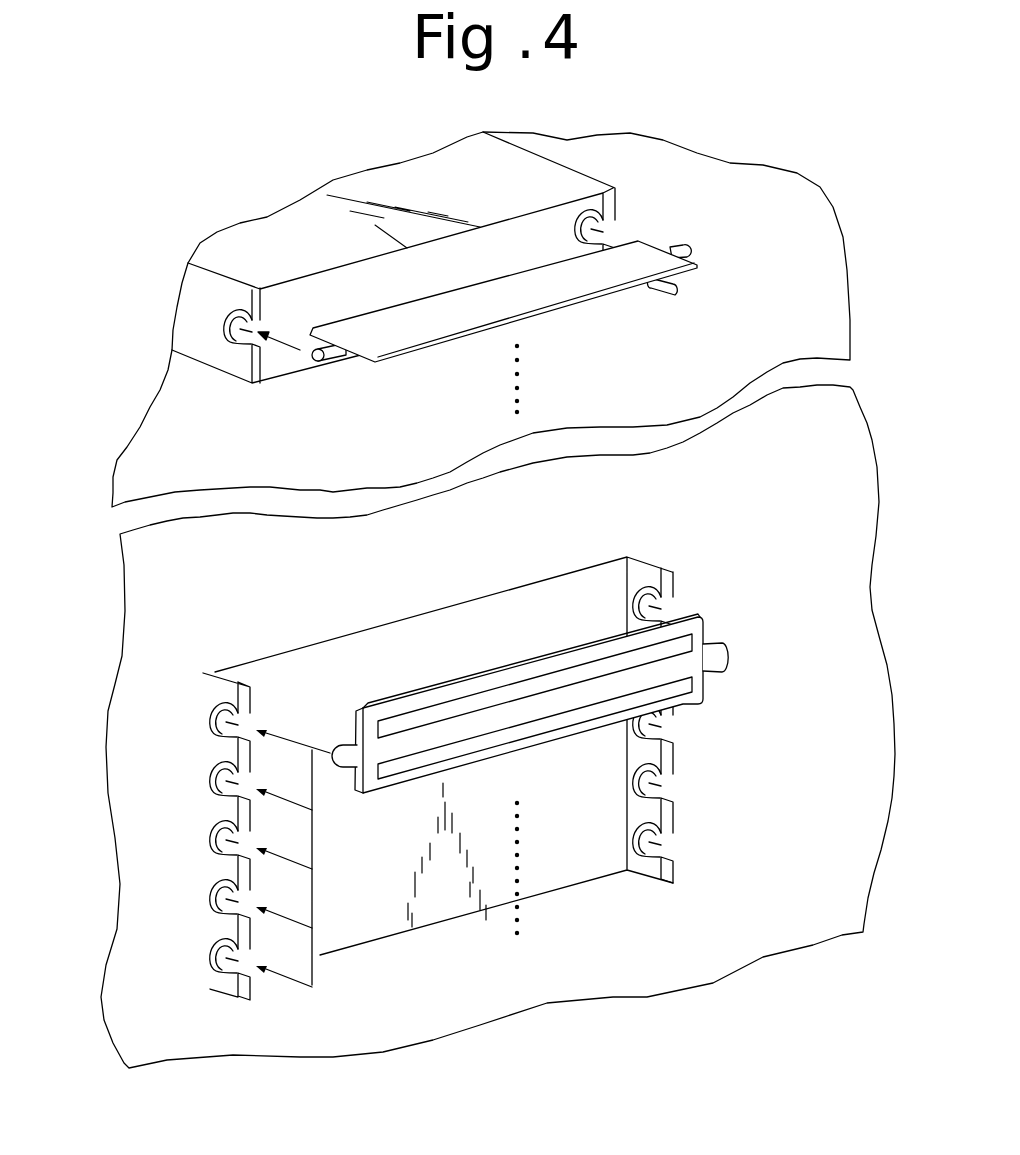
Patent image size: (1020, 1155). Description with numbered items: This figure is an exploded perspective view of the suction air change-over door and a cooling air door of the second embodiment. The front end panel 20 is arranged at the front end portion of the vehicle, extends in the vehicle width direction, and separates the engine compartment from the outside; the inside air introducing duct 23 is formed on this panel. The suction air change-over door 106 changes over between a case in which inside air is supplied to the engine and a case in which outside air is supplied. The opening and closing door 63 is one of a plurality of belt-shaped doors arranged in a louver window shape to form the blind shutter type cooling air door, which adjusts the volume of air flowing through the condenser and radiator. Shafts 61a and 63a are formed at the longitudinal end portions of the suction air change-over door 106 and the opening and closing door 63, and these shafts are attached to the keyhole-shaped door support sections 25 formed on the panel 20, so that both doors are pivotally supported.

The front end panel 20 is at (200, 693).
The inside air introducing duct 23 is at (200, 316).
The keyhole-shaped door support sections 25 is at (223, 340).
The shaft 61a is at (333, 361).
The opening and closing door 63 is at (687, 622).
The shaft 63a is at (707, 645).
The suction air change-over door 106 is at (588, 282).